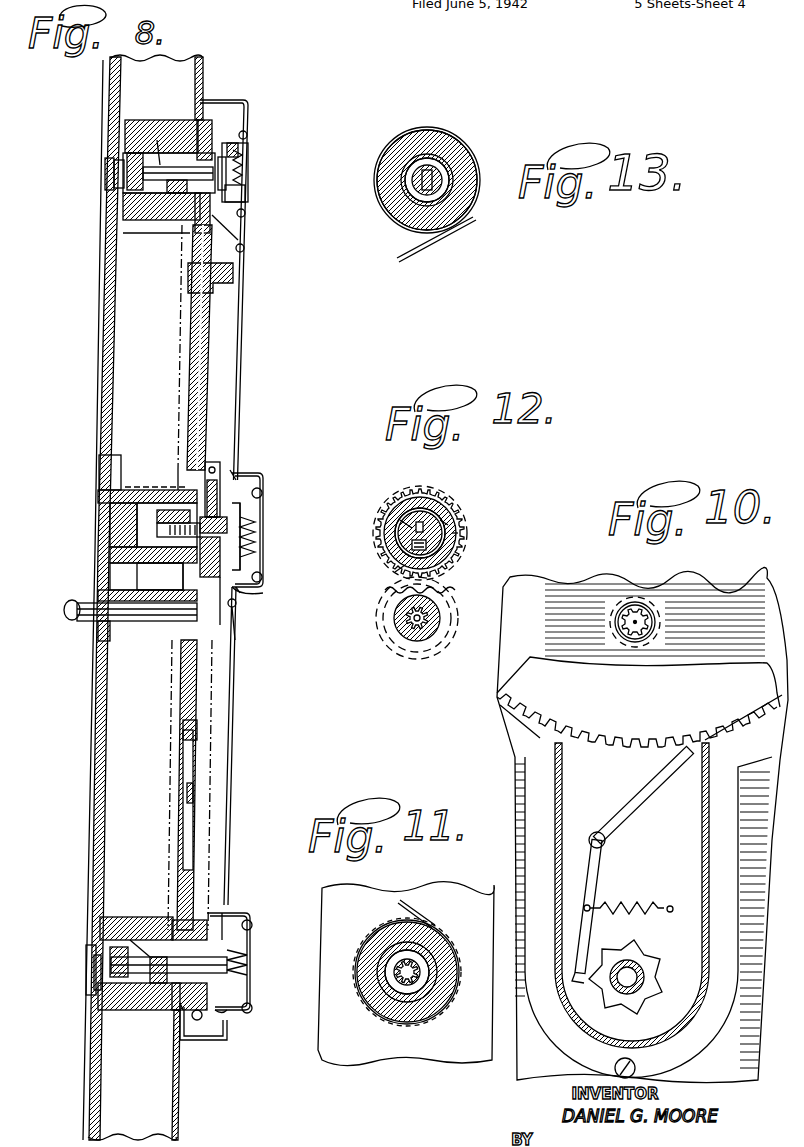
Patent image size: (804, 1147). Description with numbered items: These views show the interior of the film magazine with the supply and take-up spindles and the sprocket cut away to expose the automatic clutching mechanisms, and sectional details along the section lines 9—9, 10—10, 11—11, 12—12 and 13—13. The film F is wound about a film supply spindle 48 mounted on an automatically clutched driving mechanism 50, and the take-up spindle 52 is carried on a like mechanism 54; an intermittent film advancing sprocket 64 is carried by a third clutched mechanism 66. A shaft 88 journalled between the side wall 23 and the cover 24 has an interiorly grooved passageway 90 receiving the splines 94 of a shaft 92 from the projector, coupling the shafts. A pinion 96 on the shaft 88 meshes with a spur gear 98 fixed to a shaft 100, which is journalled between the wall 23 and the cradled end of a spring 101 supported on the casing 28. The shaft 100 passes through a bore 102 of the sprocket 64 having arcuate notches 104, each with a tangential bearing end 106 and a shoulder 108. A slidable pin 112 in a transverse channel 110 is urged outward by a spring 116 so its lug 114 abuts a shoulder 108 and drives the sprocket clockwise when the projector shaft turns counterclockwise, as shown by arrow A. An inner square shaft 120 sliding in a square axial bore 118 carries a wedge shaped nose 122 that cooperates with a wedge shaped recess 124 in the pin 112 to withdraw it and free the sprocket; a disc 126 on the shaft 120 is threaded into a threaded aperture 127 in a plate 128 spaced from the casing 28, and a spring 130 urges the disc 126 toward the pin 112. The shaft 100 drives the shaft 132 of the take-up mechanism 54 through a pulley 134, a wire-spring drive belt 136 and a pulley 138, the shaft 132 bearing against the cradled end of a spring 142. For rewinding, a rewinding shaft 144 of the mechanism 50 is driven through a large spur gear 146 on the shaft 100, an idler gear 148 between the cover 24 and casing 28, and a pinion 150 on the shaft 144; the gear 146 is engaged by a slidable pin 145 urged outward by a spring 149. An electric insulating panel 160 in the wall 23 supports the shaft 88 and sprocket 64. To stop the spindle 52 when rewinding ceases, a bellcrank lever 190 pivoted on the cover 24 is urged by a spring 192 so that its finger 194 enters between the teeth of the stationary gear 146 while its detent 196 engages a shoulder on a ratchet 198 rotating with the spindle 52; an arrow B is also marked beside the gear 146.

In FIG. 8, the section line 9— 9 is at (205, 393).
In FIG. 8, the section line 10— 10 is at (187, 1060).
In FIG. 8, the section line 11— 11 is at (166, 870).
In FIG. 8, the section line 12— 12 is at (176, 434).
In FIG. 8, the section line 13— 13 is at (185, 77).
In FIG. 8, the side wall 23 is at (105, 366).
In FIG. 8, the cover 24 is at (190, 772).
In FIG. 8, the casing 28 is at (242, 376).
In FIG. 10, the casing 28 is at (709, 858).
In FIG. 8, the film supply spindle 48 is at (130, 136).
In FIG. 13, the film supply spindle 48 is at (470, 165).
In FIG. 8, the automatically clutched driving mechanism 50 is at (103, 176).
In FIG. 13, the automatically clutched driving mechanism 50 is at (420, 160).
In FIG. 8, the take-up spindle 52 is at (101, 922).
In FIG. 11, the take-up spindle 52 is at (440, 932).
In FIG. 8, the automatically clutched driving mechanism 54 is at (82, 966).
In FIG. 11, the automatically clutched driving mechanism 54 is at (410, 1020).
In FIG. 8, the intermittent film advancing sprocket 64 is at (180, 432).
In FIG. 12, the intermittent film advancing sprocket 64 is at (440, 500).
In FIG. 8, the automatically clutched driving mechanism 66 is at (95, 531).
In FIG. 12, the automatically clutched driving mechanism 66 is at (450, 518).
In FIG. 8, the shaft 88 is at (101, 616).
In FIG. 12, the shaft 88 is at (438, 612).
In FIG. 10, the shaft 88 is at (648, 617).
In FIG. 8, the interiorly grooved passageway 90 is at (152, 632).
In FIG. 12, the interiorly grooved passageway 90 is at (412, 642).
In FIG. 10, the interiorly grooved passageway 90 is at (657, 631).
In FIG. 8, the shaft 92 is at (66, 607).
In FIG. 8, the splines 94 is at (122, 605).
In FIG. 8, the pinion 96 is at (103, 590).
In FIG. 12, the pinion 96 is at (438, 640).
In FIG. 8, the spur gear 98 is at (103, 494).
In FIG. 12, the spur gear 98 is at (440, 574).
In FIG. 8, the shaft 100 is at (98, 518).
In FIG. 12, the shaft 100 is at (458, 530).
In FIG. 8, the spring 101 is at (240, 596).
In FIG. 8, the bore 102 is at (211, 462).
In FIG. 12, the arcuate notches 104 is at (412, 515).
In FIG. 11, the arcuate notches 104 is at (430, 952).
In FIG. 12, the end of notch 106 is at (405, 545).
In FIG. 13, the shoulder 108 is at (440, 162).
In FIG. 12, the shoulder 108 is at (460, 510).
In FIG. 8, the transverse channel 110 is at (110, 537).
In FIG. 8, the slidable pin 112 is at (157, 157).
In FIG. 12, the slidable pin 112 is at (395, 520).
In FIG. 13, the lug 114 is at (430, 150).
In FIG. 12, the lug 114 is at (425, 512).
In FIG. 12, the spring 116 is at (395, 572).
In FIG. 8, the square axial bore 118 is at (262, 490).
In FIG. 8, the inner square shaft 120 is at (222, 157).
In FIG. 8, the wedge shaped nose 122 is at (155, 505).
In FIG. 8, the wedge shaped recess 124 is at (128, 492).
In FIG. 8, the disc 126 is at (232, 128).
In FIG. 8, the threaded aperture 127 is at (246, 190).
In FIG. 8, the plate 128 is at (256, 500).
In FIG. 8, the spring 130 is at (263, 552).
In FIG. 8, the shaft 132 is at (98, 977).
In FIG. 11, the shaft 132 is at (430, 987).
In FIG. 8, the pulley 134 is at (233, 470).
In FIG. 8, the wire-spring drive belt 136 is at (199, 1030).
In FIG. 8, the pulley 138 is at (224, 1041).
In FIG. 8, the spring 142 is at (222, 932).
In FIG. 8, the rewinding shaft 144 is at (112, 178).
In FIG. 13, the rewinding shaft 144 is at (478, 205).
In FIG. 8, the slidable pin 145 is at (136, 579).
In FIG. 8, the large spur gear 146 is at (207, 362).
In FIG. 10, the large spur gear 146 is at (527, 690).
In FIG. 8, the idler gear 148 is at (228, 294).
In FIG. 8, the spring 149 is at (222, 622).
In FIG. 8, the pinion 150 is at (248, 242).
In FIG. 8, the electric insulating panel 160 is at (101, 642).
In FIG. 8, the bellcrank lever 190 is at (195, 796).
In FIG. 10, the bellcrank lever 190 is at (615, 823).
In FIG. 10, the spring 192 is at (652, 901).
In FIG. 10, the finger 194 is at (685, 780).
In FIG. 10, the detent 196 is at (608, 1000).
In FIG. 8, the ratchet 198 is at (180, 1008).
In FIG. 10, the ratchet 198 is at (648, 958).
In FIG. 8, the arrow A is at (77, 616).
In FIG. 12, the arrow A is at (368, 630).
In FIG. 10, the direction B is at (712, 713).
In FIG. 8, the film F is at (103, 290).